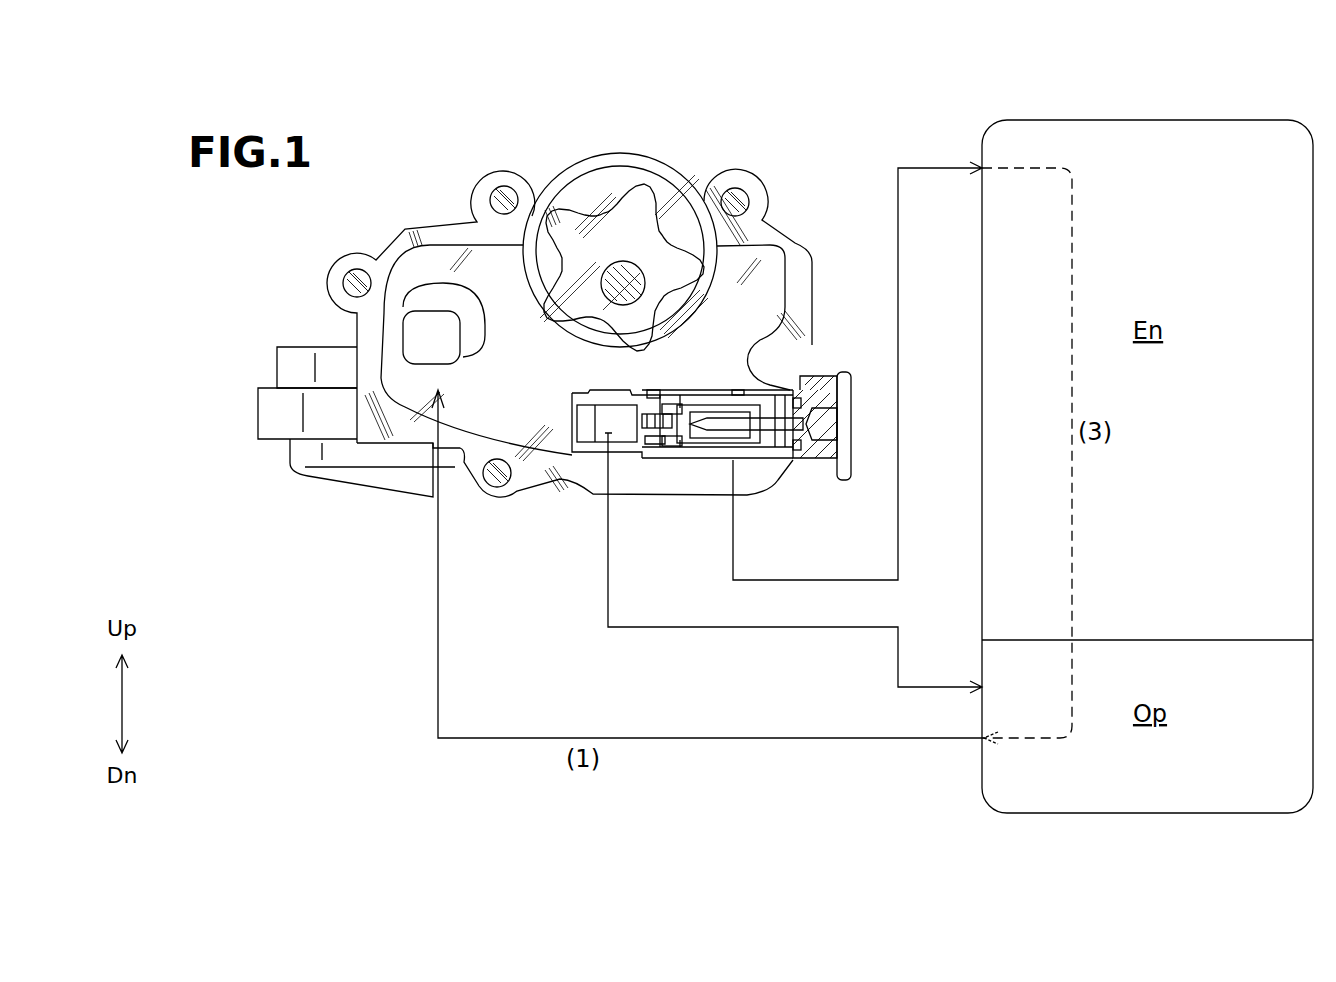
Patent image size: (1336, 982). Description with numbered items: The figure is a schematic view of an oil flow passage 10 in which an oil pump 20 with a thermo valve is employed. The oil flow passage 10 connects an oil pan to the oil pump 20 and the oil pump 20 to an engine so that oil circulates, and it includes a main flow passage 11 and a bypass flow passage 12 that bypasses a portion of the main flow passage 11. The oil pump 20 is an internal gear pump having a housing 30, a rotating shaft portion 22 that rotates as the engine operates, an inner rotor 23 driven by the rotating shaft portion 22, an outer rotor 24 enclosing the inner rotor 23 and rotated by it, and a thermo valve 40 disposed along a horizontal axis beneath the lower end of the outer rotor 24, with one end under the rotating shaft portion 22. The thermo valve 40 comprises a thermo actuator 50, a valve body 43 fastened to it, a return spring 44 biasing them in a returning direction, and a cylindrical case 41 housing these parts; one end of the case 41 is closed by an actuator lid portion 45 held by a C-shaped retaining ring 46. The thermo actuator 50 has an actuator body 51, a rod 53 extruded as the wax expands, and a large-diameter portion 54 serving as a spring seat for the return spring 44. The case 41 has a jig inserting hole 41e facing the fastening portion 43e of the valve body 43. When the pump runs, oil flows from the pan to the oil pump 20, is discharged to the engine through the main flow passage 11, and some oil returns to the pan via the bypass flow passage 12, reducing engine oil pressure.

The oil flow passage 10 is at (870, 685).
The main flow passage 11 is at (865, 580).
The bypass flow passage 12 is at (805, 627).
The oil pump 20 is at (558, 94).
The rotating shaft portion 22 is at (628, 268).
The inner rotor 23 is at (603, 232).
The outer rotor 24 is at (572, 180).
The housing 30 is at (764, 176).
The thermo valve 40 is at (855, 543).
The case 41 is at (720, 460).
The jig inserting hole 41e is at (653, 395).
The valve body 43 is at (614, 443).
The fastening portion 43e is at (687, 407).
The return spring 44 is at (693, 450).
The actuator lid portion 45 is at (842, 480).
The C-shaped retaining ring 46 is at (793, 457).
The thermo actuator 50 is at (760, 450).
The actuator body 51 is at (780, 400).
The rod 53 is at (800, 400).
The large-diameter portion 54 is at (737, 395).